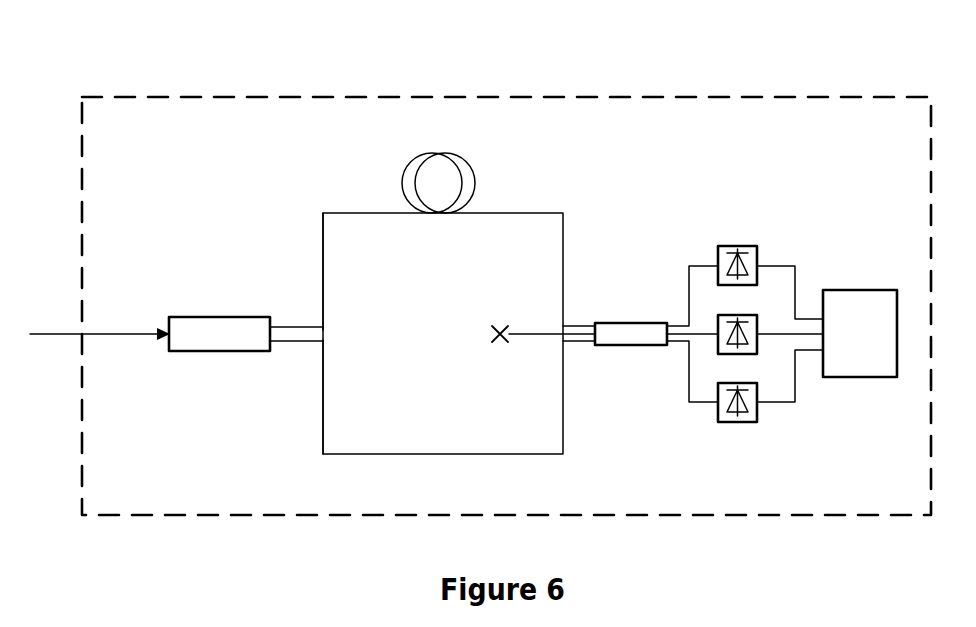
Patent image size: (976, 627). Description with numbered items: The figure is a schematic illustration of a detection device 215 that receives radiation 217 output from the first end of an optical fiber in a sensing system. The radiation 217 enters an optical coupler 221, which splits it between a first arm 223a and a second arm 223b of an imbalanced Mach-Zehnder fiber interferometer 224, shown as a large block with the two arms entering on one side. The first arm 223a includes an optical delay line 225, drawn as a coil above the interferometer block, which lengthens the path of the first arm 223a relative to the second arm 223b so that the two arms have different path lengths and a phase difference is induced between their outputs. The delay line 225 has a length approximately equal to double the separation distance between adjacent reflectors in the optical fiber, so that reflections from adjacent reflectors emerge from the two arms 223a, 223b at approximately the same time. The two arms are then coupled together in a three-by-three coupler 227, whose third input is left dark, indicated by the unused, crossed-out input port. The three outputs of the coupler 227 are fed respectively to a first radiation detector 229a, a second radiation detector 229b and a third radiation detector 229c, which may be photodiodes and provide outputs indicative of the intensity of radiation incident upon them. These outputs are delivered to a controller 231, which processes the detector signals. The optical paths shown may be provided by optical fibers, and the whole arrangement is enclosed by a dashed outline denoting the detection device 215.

The detection device 215 is at (292, 97).
The radiation 217 is at (100, 325).
The optical coupler 221 is at (218, 317).
The first arm 223a is at (323, 268).
The second arm 223b is at (323, 412).
The imbalanced Mach-Zehnder fiber interferometer 224 is at (343, 183).
The optical delay line 225 is at (464, 160).
The 3×3 coupler 227 is at (620, 323).
The first radiation detector 229a is at (742, 246).
The second radiation detector 229b is at (716, 345).
The third radiation detector 229c is at (740, 421).
The controller 231 is at (860, 333).